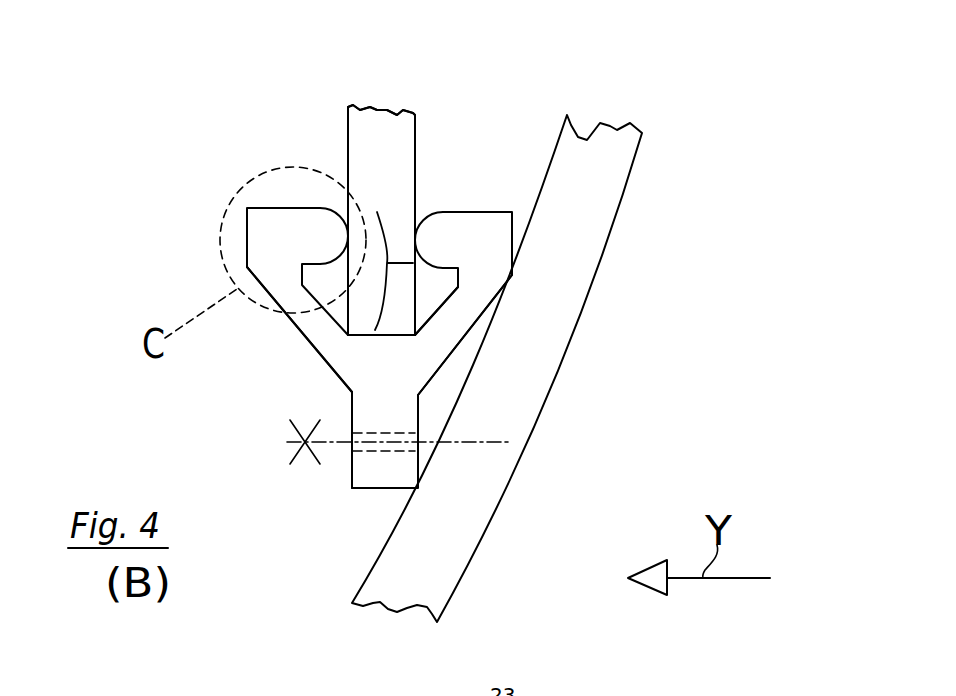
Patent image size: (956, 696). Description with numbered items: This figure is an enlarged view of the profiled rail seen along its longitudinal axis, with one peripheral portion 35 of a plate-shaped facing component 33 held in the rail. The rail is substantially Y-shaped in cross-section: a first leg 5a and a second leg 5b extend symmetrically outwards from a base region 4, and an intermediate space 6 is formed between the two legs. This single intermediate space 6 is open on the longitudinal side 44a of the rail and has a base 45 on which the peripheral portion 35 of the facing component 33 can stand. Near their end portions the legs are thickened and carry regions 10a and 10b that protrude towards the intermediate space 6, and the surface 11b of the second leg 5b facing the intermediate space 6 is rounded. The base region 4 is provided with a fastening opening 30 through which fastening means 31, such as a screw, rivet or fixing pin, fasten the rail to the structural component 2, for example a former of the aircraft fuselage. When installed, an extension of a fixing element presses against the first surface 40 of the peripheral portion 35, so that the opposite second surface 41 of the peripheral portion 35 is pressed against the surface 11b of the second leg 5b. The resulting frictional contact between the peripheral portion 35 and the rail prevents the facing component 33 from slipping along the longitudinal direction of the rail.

The structural component 2 is at (530, 403).
The base region 4 is at (368, 470).
The first leg 5a is at (307, 331).
The second leg 5b is at (455, 316).
The intermediate space 6 is at (431, 296).
The protruding region 10a is at (315, 244).
The protruding region 10b is at (455, 242).
The surface of the second leg 11b is at (408, 209).
The fastening opening 30 is at (382, 452).
The fastening means 31 is at (337, 440).
The plate-shaped facing component 33 is at (397, 162).
The peripheral portion 35 is at (415, 267).
The first surface 40 is at (338, 169).
The second surface 41 is at (421, 180).
The longitudinal side 44a is at (437, 95).
The base of the intermediate space 45 is at (390, 332).